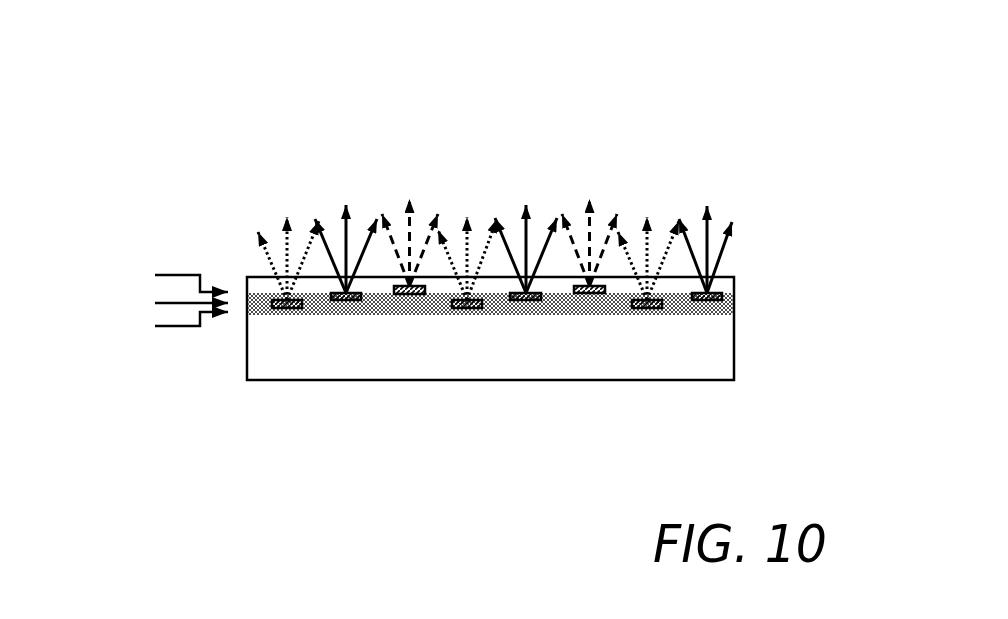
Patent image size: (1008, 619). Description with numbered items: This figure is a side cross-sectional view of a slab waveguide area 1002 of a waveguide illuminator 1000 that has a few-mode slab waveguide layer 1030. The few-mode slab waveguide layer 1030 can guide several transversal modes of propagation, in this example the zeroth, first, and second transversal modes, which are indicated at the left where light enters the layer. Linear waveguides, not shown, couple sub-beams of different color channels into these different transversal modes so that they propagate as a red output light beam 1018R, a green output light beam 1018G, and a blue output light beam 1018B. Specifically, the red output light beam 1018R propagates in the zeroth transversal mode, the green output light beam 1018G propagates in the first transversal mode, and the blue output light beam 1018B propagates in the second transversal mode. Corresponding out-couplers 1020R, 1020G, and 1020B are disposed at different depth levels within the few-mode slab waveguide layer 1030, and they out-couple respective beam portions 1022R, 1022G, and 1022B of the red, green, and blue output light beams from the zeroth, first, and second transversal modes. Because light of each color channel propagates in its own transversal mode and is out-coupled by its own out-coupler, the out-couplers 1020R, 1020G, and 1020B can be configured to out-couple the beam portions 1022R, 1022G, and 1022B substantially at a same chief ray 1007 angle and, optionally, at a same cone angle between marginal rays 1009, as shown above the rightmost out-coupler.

The waveguide illuminator 1000 is at (347, 96).
The slab waveguide area 1002 is at (718, 357).
The few-mode slab waveguide layer 1030 is at (734, 308).
The red out-coupler 1020R is at (286, 308).
The green out-coupler 1020G is at (345, 300).
The blue out-coupler 1020B is at (410, 294).
The red beam portion 1022R is at (322, 221).
The green beam portion 1022G is at (383, 208).
The blue beam portion 1022B is at (447, 200).
The red output light beam 1018R is at (192, 326).
The green output light beam 1018G is at (165, 303).
The blue output light beam 1018B is at (182, 275).
The chief ray 1007 is at (710, 220).
The marginal rays 1009 is at (688, 253).